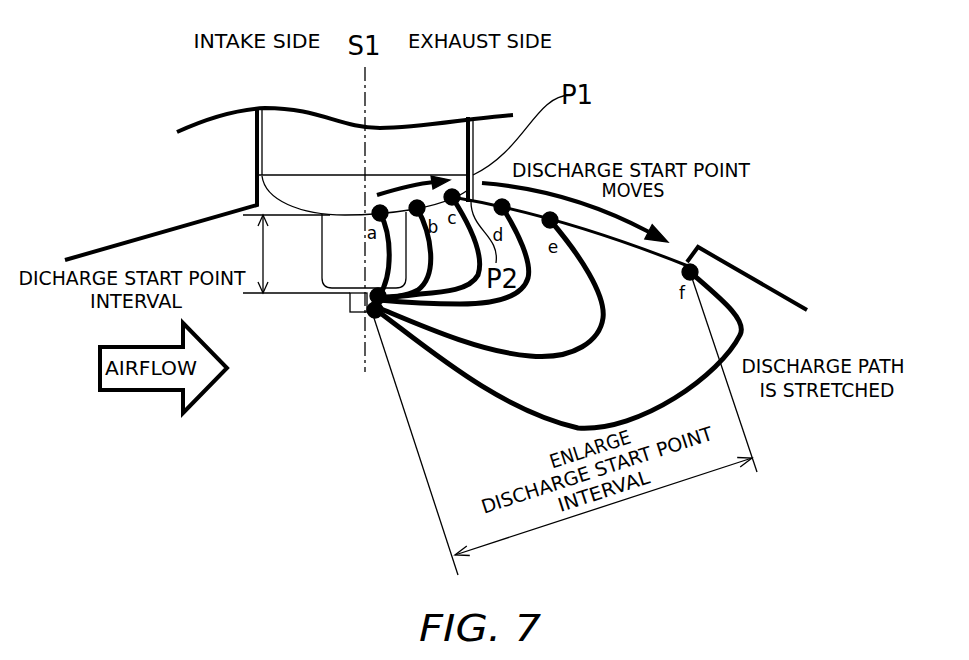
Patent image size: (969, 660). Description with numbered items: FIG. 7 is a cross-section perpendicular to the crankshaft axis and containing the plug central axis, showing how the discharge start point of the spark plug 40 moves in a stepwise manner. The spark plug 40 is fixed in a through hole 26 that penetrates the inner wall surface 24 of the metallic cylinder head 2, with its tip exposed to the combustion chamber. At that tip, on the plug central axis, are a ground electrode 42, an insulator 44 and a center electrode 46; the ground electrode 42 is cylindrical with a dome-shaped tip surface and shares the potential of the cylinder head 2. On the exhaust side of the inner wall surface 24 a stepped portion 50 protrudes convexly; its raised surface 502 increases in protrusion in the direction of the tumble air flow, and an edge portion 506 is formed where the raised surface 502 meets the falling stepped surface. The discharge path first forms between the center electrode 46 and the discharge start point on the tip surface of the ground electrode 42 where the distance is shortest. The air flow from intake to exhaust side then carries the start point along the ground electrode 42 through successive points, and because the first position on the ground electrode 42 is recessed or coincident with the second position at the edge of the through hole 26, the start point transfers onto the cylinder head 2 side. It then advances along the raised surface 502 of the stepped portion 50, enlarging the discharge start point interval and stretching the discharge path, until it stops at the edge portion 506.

The cylinder head 2 is at (677, 103).
The inner wall surface 24 is at (752, 275).
The through hole 26 is at (253, 195).
The spark plug 40 is at (283, 152).
The ground electrode 42 is at (288, 205).
The insulator 44 is at (340, 293).
The center electrode 46 is at (359, 313).
The stepped portion 50 is at (596, 269).
The raised surface 502 is at (636, 248).
The edge portion 506 is at (695, 285).